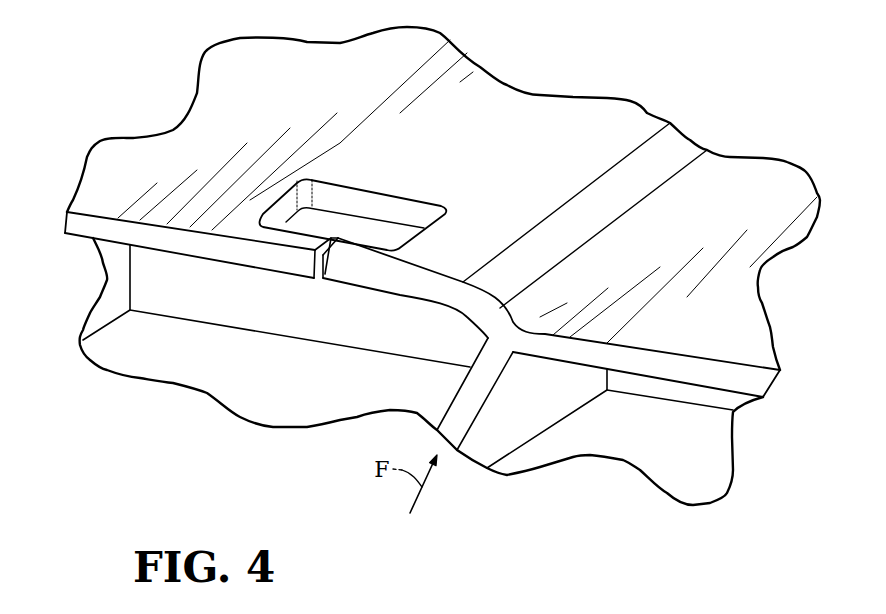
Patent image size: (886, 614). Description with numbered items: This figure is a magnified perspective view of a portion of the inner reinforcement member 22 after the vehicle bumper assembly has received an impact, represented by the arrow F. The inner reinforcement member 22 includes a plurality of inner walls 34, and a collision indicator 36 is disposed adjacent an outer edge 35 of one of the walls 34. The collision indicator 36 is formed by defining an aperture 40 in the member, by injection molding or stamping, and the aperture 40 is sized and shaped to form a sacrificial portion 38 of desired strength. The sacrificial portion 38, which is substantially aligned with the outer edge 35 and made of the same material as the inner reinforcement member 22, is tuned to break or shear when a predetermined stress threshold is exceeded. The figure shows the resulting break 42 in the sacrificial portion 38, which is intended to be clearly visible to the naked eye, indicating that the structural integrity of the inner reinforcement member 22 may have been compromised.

The inner reinforcement member 22 is at (663, 72).
The inner wall 34 is at (490, 100).
The outer edge 35 is at (137, 230).
The collision indicator 36 is at (437, 233).
The sacrificial portion 38 is at (268, 257).
The aperture 40 is at (312, 222).
The break 42 is at (315, 291).